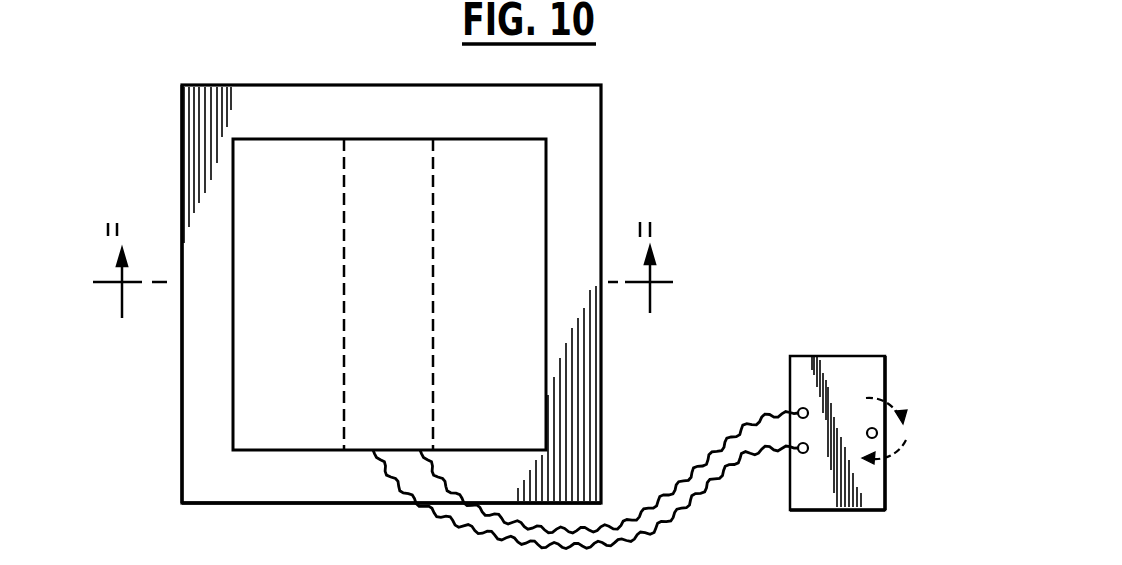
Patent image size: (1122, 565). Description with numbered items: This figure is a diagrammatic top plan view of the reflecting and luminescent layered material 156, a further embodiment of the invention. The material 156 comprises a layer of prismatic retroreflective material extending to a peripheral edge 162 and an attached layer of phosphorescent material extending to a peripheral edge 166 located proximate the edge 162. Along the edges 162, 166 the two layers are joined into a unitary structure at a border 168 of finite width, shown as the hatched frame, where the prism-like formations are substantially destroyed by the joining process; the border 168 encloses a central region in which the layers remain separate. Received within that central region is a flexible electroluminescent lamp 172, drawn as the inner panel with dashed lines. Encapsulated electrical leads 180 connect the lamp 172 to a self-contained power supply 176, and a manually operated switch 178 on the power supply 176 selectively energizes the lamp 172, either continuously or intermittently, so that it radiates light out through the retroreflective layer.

The reflecting and luminescent layered material 156 is at (645, 127).
The peripheral edge 162 is at (220, 503).
The peripheral edge 166 is at (391, 534).
The border 168 is at (193, 425).
The electroluminescent lamp 172 is at (405, 283).
The power supply 176 is at (830, 356).
The manually operated switch 178 is at (893, 455).
The encapsulated electrical leads 180 is at (702, 495).